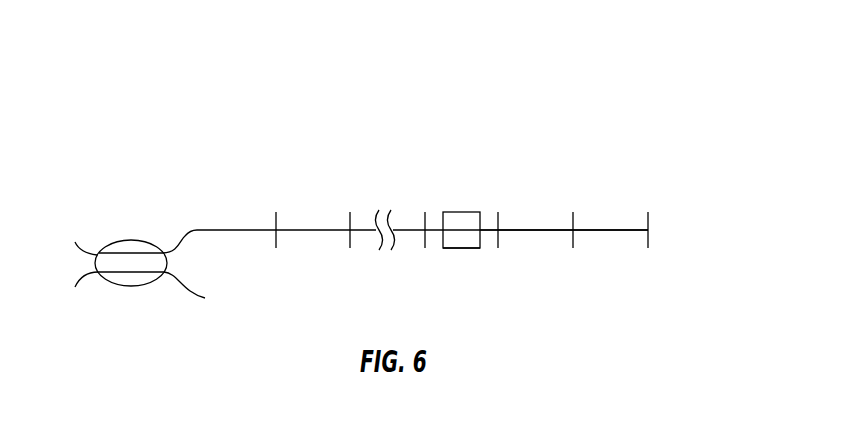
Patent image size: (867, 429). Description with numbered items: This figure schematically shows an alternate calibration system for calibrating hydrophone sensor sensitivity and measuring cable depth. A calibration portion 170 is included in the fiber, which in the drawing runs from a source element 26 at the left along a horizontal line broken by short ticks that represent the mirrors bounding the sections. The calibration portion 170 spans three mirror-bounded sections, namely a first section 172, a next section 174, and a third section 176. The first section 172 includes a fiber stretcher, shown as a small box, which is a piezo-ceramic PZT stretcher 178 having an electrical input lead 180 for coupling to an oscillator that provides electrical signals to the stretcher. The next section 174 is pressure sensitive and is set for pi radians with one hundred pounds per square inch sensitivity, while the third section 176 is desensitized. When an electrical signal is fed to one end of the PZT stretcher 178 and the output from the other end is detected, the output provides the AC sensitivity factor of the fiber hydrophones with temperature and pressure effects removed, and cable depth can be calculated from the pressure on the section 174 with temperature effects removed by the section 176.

The sensor/device node 26 is at (131, 240).
The calibration portion 170 is at (505, 128).
The first section 172 is at (488, 227).
The next section 174 is at (523, 230).
The third section 176 is at (615, 228).
The PZT stretcher 178 is at (463, 212).
The electrical input lead 180 is at (463, 248).